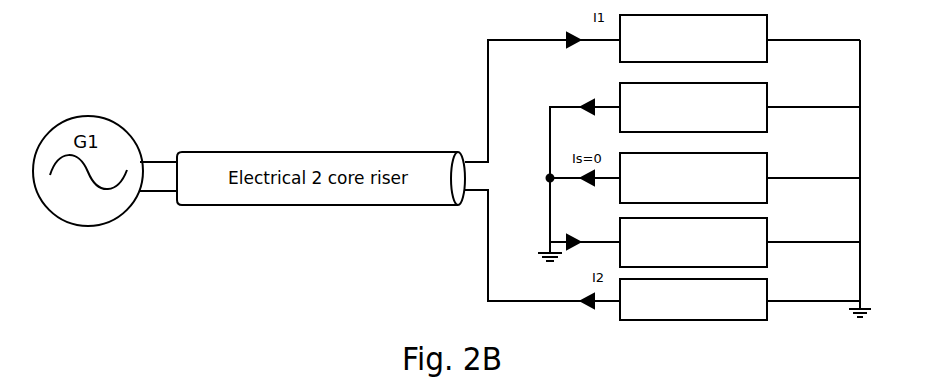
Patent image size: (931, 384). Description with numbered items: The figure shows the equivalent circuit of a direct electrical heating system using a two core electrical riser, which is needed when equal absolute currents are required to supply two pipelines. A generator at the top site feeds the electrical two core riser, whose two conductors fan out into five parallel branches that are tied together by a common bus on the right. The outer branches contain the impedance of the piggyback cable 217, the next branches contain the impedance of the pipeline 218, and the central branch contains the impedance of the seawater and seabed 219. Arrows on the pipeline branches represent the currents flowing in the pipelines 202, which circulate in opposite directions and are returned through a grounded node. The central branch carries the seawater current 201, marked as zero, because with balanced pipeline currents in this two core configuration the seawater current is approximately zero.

The impedance of piggyback cable 217 is at (693, 167).
The impedance of pipeline 218 is at (693, 175).
The impedance of seawater and seabed 219 is at (693, 178).
The seawater current 201 is at (584, 187).
The currents flowing in the pipelines 202 is at (579, 172).